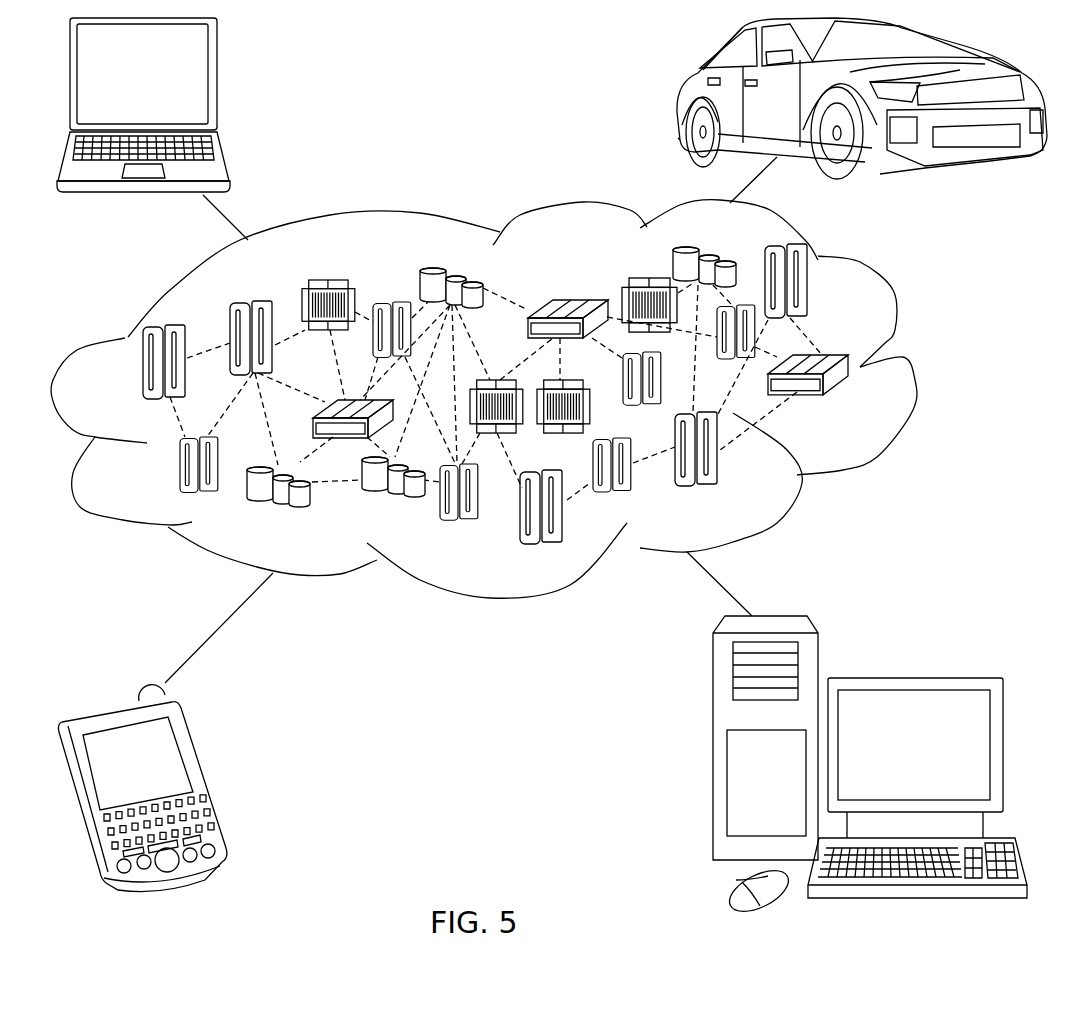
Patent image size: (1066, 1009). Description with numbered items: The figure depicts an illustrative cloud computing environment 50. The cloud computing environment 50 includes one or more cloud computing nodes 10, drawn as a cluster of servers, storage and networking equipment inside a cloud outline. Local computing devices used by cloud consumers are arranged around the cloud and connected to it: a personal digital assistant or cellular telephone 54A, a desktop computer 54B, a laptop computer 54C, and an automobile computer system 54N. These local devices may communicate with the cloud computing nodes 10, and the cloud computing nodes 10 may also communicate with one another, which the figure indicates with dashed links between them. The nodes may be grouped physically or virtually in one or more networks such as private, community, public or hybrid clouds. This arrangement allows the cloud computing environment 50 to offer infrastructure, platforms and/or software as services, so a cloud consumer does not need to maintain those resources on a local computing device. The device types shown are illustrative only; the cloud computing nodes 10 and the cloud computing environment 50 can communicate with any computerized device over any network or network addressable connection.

The cloud computing node 10 is at (849, 403).
The cloud computing environment 50 is at (913, 372).
The personal digital assistant or cellular telephone 54A is at (203, 777).
The desktop computer 54B is at (910, 677).
The laptop computer 54C is at (217, 82).
The automobile computer system 54N is at (683, 102).